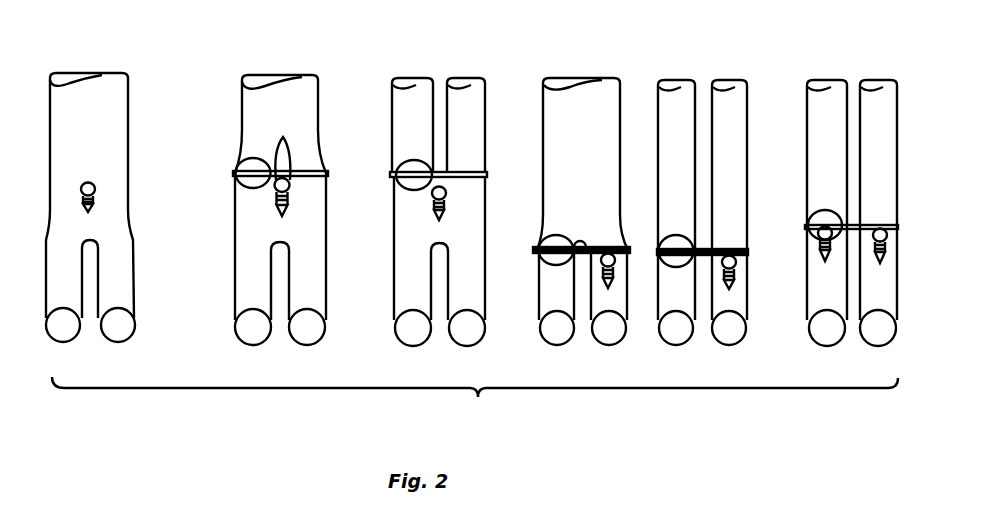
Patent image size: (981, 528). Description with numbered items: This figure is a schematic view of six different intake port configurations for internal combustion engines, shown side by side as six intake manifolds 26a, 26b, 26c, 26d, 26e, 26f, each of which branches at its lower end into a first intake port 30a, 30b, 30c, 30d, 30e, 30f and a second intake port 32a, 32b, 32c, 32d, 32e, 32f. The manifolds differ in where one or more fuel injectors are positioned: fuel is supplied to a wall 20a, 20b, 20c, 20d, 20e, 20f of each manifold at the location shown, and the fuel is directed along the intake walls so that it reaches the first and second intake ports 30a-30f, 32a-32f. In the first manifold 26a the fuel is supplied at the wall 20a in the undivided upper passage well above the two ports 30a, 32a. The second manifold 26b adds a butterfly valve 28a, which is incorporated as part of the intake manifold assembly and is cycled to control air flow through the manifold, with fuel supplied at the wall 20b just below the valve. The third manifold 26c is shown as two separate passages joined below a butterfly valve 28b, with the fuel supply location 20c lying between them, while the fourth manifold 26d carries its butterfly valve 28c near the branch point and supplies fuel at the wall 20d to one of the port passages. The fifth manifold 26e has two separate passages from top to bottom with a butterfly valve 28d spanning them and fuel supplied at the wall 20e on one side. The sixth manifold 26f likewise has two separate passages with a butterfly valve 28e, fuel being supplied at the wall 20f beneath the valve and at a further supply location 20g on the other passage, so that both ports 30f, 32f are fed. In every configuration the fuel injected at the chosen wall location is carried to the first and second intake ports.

The intake manifold 26a is at (97, 90).
The intake manifold 26b is at (288, 90).
The intake manifold 26c is at (411, 92).
The intake manifold 26d is at (578, 90).
The intake manifold 26e is at (675, 92).
The intake manifold 26f is at (833, 90).
The butterfly valve 28a is at (247, 160).
The butterfly valve 28b is at (407, 162).
The butterfly valve 28c is at (554, 235).
The butterfly valve 28d is at (672, 237).
The butterfly valve 28e is at (822, 210).
The wall 20a is at (93, 213).
The wall 20b is at (282, 216).
The wall 20c is at (440, 220).
The wall 20d is at (608, 289).
The wall 20e is at (730, 289).
The wall 20f is at (818, 229).
The fastener 20g is at (878, 264).
The first intake port 30a is at (65, 322).
The first intake port 30b is at (255, 324).
The first intake port 30c is at (415, 325).
The first intake port 30d is at (559, 325).
The first intake port 30e is at (678, 325).
The first intake port 30f is at (829, 325).
The second intake port 32a is at (120, 322).
The second intake port 32b is at (309, 324).
The second intake port 32c is at (469, 325).
The second intake port 32d is at (611, 325).
The second intake port 32e is at (731, 325).
The second intake port 32f is at (880, 325).